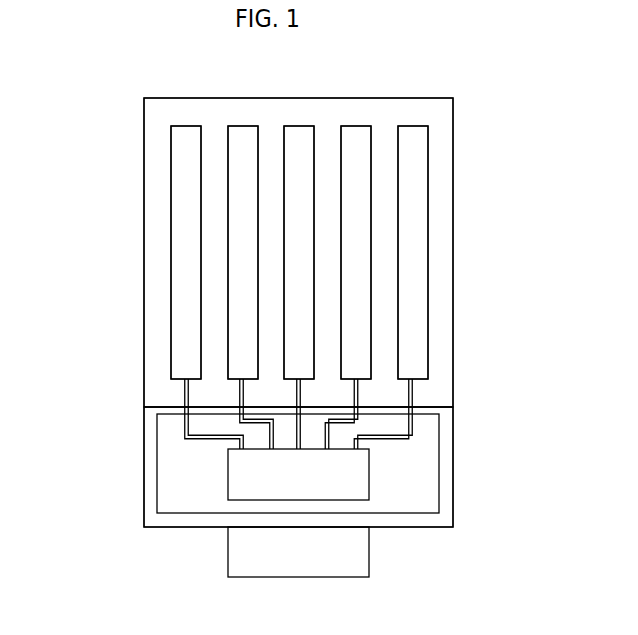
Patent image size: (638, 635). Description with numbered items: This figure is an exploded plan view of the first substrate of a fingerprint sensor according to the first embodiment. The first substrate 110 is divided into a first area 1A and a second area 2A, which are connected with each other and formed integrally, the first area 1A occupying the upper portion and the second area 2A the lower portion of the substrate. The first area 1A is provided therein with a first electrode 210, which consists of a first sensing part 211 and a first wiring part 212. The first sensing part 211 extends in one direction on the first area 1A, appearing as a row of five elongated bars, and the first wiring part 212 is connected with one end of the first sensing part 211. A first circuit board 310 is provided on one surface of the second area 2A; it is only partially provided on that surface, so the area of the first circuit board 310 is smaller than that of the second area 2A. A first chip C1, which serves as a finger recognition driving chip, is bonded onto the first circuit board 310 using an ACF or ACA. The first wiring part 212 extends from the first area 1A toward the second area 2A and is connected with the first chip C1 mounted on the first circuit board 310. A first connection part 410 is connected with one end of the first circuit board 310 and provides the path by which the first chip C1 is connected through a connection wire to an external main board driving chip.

The first substrate 110 is at (144, 197).
The first area 1A is at (445, 243).
The first electrode 210 is at (63, 355).
The first sensing part 211 is at (178, 362).
The first wiring part 212 is at (184, 393).
The second area 2A is at (446, 438).
The first circuit board 310 is at (157, 488).
The first chip C1 is at (369, 473).
The first connection part 410 is at (369, 553).